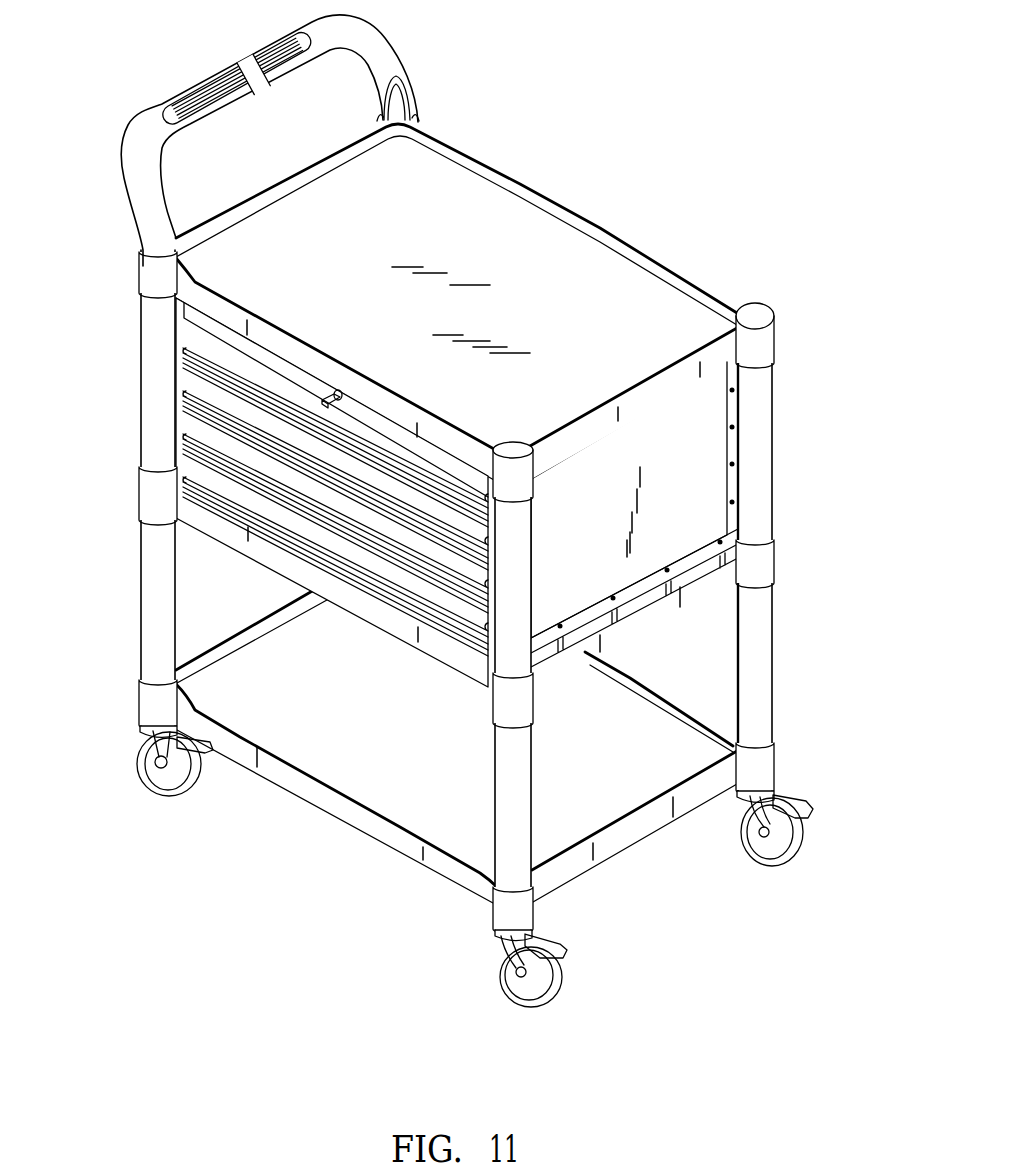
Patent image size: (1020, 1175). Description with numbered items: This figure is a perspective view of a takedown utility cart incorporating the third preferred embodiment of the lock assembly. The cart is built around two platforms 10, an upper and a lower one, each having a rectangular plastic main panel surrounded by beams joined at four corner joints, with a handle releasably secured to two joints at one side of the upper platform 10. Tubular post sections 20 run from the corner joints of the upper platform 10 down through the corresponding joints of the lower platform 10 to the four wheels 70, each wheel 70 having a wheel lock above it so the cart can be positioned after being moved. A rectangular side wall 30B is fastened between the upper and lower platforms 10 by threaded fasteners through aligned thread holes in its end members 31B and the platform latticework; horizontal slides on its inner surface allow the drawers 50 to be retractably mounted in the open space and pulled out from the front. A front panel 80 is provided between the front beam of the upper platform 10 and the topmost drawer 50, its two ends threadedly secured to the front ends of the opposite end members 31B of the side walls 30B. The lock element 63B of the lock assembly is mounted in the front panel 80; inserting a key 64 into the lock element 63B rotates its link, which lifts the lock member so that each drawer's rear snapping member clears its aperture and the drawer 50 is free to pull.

The platform 10 is at (523, 265).
The post section 20 is at (150, 433).
The side wall 30B is at (690, 444).
The end member 31B is at (720, 560).
The drawer 50 is at (200, 389).
The lock element 63B is at (340, 396).
The key 64 is at (322, 393).
The wheel 70 is at (167, 783).
The front panel 80 is at (216, 332).